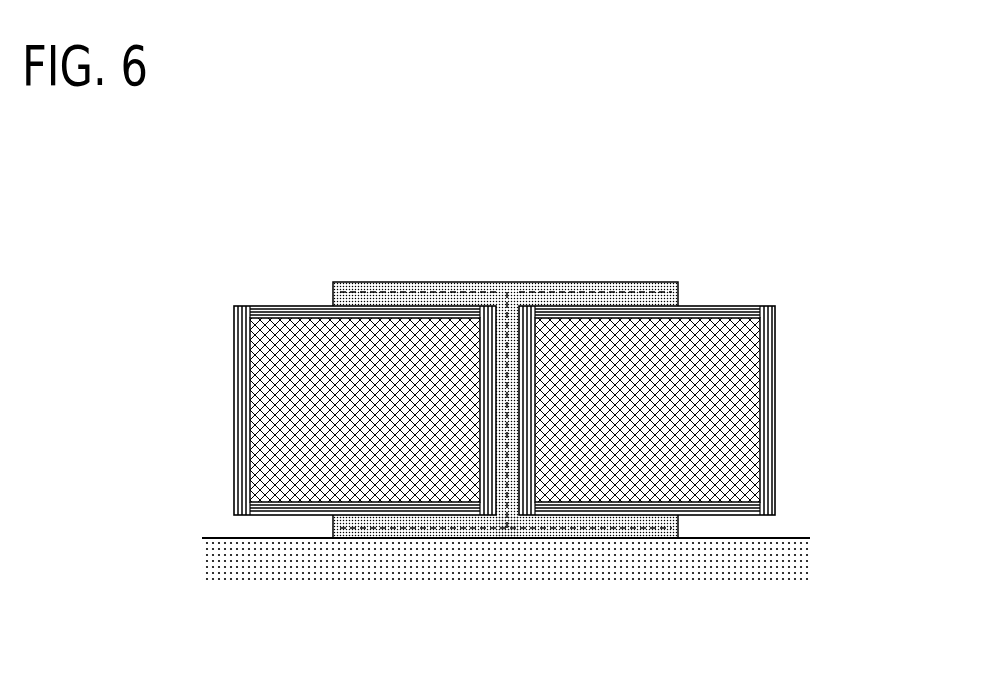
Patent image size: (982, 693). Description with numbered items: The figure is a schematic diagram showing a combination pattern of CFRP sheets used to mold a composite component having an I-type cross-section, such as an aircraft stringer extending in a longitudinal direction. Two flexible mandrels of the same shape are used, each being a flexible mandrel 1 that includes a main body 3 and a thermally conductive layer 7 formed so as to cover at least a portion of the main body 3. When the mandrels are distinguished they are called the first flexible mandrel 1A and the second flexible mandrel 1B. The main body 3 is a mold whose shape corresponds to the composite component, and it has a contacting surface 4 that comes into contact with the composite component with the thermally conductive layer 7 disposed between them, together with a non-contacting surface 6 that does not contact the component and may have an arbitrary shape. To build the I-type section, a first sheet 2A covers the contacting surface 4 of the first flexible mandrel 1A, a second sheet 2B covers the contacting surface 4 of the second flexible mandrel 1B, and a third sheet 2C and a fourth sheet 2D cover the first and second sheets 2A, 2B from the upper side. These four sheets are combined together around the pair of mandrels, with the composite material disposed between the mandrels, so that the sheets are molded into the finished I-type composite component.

The flexible mandrel 1 is at (796, 222).
The first flexible mandrel 1A is at (757, 305).
The second flexible mandrel 1B is at (258, 305).
The first sheet 2A is at (630, 297).
The second sheet 2B is at (360, 297).
The third sheet 2C is at (503, 278).
The fourth sheet 2D is at (505, 540).
The main body 3 is at (297, 460).
The contacting surface 4 is at (438, 303).
The non-contacting surface 6 is at (232, 352).
The thermally conductive layer 7 is at (233, 408).